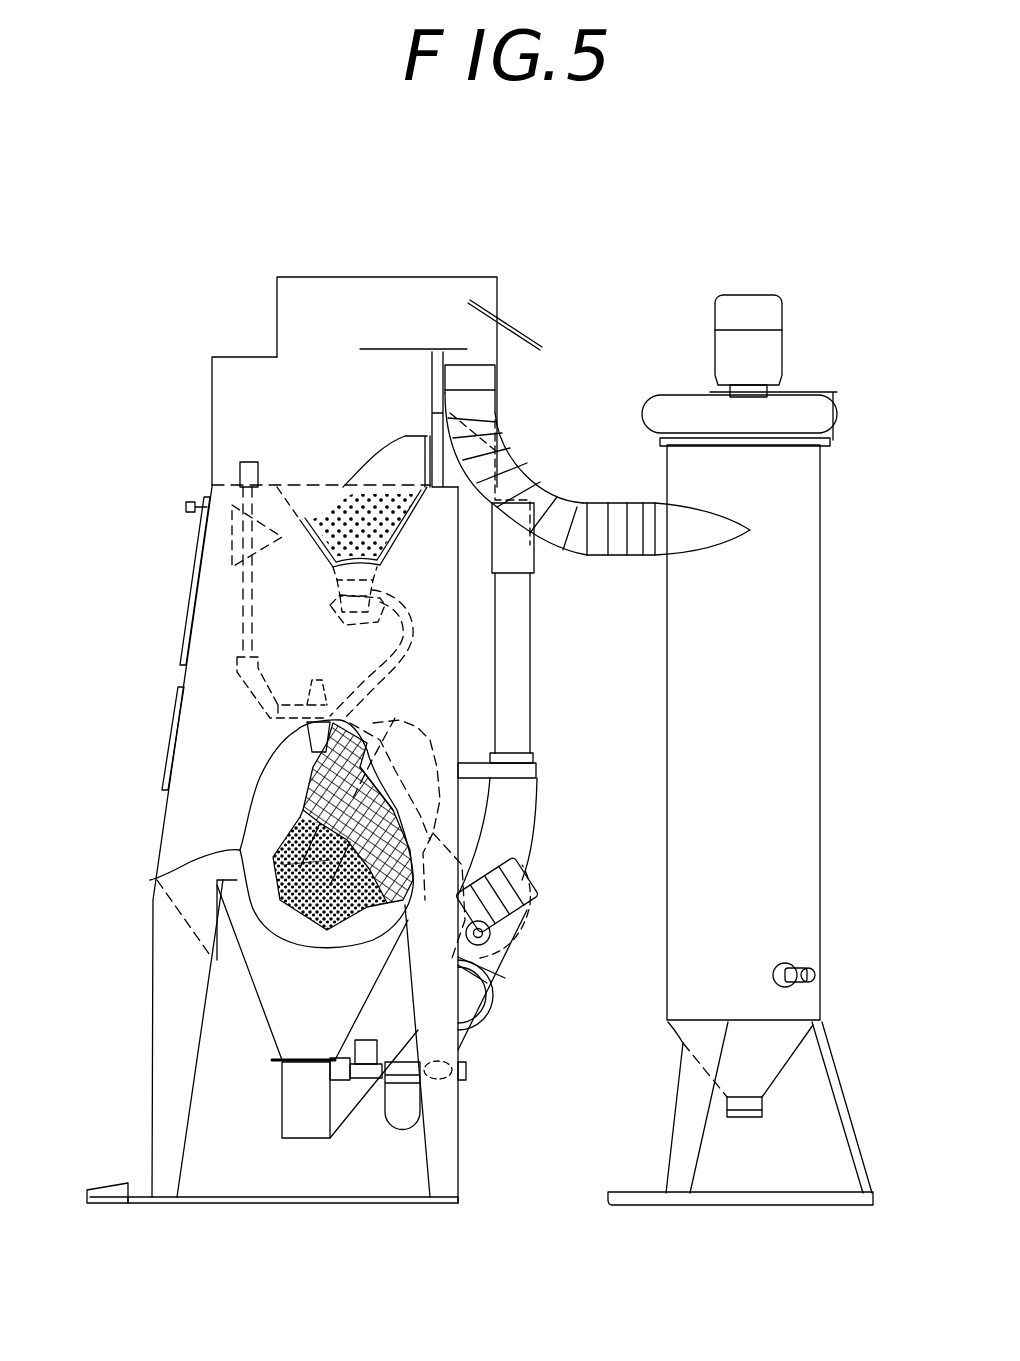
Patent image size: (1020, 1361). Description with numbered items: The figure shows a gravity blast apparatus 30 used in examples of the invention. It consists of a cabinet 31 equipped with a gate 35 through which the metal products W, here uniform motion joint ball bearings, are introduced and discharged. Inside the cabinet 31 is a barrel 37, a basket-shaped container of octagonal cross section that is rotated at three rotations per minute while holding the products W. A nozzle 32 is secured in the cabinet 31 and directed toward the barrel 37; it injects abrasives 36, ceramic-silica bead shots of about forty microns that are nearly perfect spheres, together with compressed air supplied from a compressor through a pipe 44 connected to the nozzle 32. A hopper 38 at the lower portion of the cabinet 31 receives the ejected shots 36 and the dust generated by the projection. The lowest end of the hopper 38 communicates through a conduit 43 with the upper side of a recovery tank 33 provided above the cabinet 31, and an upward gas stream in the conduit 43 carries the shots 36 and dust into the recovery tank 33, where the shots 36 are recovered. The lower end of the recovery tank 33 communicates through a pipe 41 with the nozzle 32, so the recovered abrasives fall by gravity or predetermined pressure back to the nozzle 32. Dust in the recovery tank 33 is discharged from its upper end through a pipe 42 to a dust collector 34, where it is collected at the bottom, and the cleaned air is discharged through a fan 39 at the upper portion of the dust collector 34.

The gravity blast apparatus 30 is at (280, 226).
The cabinet 31 is at (185, 822).
The nozzle 32 is at (313, 742).
The recovery tank 33 is at (290, 352).
The dust collector 34 is at (795, 680).
The gate 35 is at (165, 728).
The abrasives (shots) 36 is at (345, 525).
The barrel 37 is at (283, 835).
The hopper 38 is at (245, 1013).
The fan 39 is at (782, 413).
The pipe 41 is at (360, 653).
The pipe 42 is at (578, 505).
The conduit 43 is at (507, 648).
The pipe 44 is at (240, 600).
The metal-products (objects to be machine worked) W is at (162, 880).